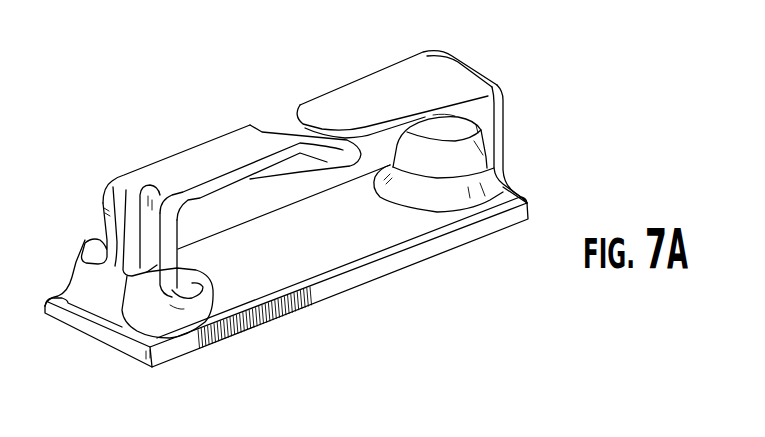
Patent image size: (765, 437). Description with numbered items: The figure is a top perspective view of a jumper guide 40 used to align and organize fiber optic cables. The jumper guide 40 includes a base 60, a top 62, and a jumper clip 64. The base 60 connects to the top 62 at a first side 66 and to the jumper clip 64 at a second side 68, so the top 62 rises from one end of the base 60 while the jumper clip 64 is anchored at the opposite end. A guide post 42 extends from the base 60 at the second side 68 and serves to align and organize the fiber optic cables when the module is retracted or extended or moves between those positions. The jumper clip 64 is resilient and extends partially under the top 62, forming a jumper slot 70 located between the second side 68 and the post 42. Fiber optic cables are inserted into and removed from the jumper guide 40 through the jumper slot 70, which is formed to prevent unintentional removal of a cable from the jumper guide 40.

The jumper guide 40 is at (480, 50).
The guide post 42 is at (213, 285).
The base 60 is at (417, 261).
The top 62 is at (386, 67).
The jumper clip 64 is at (222, 137).
The first side 66 is at (503, 126).
The second side 68 is at (100, 243).
The jumper slot 70 is at (295, 128).